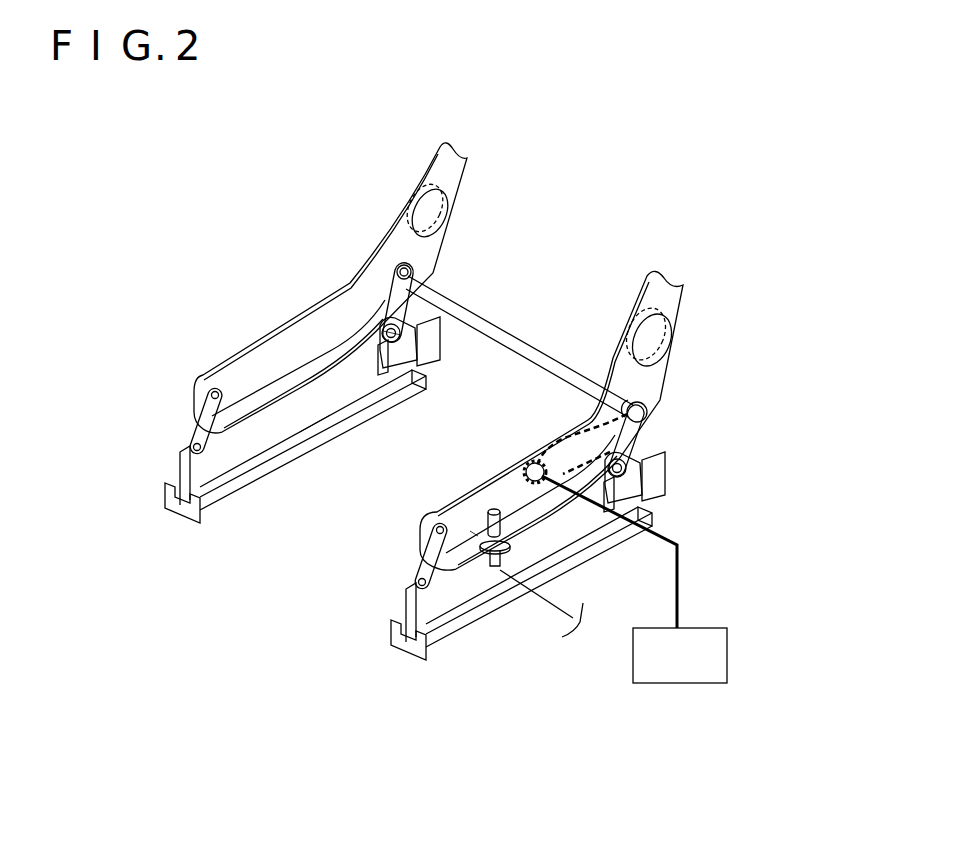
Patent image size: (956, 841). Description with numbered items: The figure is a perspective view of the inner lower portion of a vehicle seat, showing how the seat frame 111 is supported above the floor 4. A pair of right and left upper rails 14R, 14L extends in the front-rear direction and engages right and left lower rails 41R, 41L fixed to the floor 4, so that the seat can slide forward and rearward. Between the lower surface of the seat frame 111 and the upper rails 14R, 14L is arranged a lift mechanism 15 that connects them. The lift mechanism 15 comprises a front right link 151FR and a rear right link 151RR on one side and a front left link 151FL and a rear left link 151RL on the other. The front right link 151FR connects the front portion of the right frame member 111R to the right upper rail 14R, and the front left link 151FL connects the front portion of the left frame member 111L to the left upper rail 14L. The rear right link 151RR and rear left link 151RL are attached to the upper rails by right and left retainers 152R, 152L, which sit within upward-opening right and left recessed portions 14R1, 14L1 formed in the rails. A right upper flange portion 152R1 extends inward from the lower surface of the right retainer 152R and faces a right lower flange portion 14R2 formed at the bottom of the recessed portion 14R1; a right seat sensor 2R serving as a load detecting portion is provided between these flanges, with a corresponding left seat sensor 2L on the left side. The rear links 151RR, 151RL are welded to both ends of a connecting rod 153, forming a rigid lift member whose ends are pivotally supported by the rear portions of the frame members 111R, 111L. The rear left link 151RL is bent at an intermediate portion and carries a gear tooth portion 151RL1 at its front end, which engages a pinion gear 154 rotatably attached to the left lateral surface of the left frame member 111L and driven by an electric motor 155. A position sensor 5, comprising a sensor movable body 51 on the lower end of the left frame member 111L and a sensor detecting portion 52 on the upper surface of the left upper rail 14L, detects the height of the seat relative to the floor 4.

The right seat sensor 2R is at (423, 340).
The left seat sensor 2L is at (648, 493).
The floor 4 is at (279, 706).
The position sensor 5 is at (470, 531).
The right upper rail 14R is at (187, 470).
The right recessed portion 14R1 is at (387, 390).
The right lower flange portion 14R2 is at (345, 396).
The left upper rail 14L is at (415, 608).
The left recessed portion 14L1 is at (620, 505).
The lift mechanism 15 is at (696, 384).
The right lower rail 41R is at (195, 512).
The left lower rail 41L is at (435, 658).
The sensor movable body 51 is at (487, 521).
The sensor detecting portion 52 is at (487, 570).
The seat frame 111 is at (400, 232).
The right frame member 111R is at (265, 347).
The left frame member 111L is at (467, 480).
The front right link 151FR is at (195, 423).
The front left link 151FL is at (418, 568).
The rear right link 151RR is at (383, 287).
The rear left link 151RL is at (640, 437).
The gear tooth portion 151RL1 is at (612, 330).
The right retainer 152R is at (437, 298).
The right upper flange portion 152R1 is at (497, 342).
The left retainer 152L is at (667, 453).
The connecting rod 153 is at (500, 322).
The pinion gear 154 is at (524, 472).
The electric motor 155 is at (728, 652).